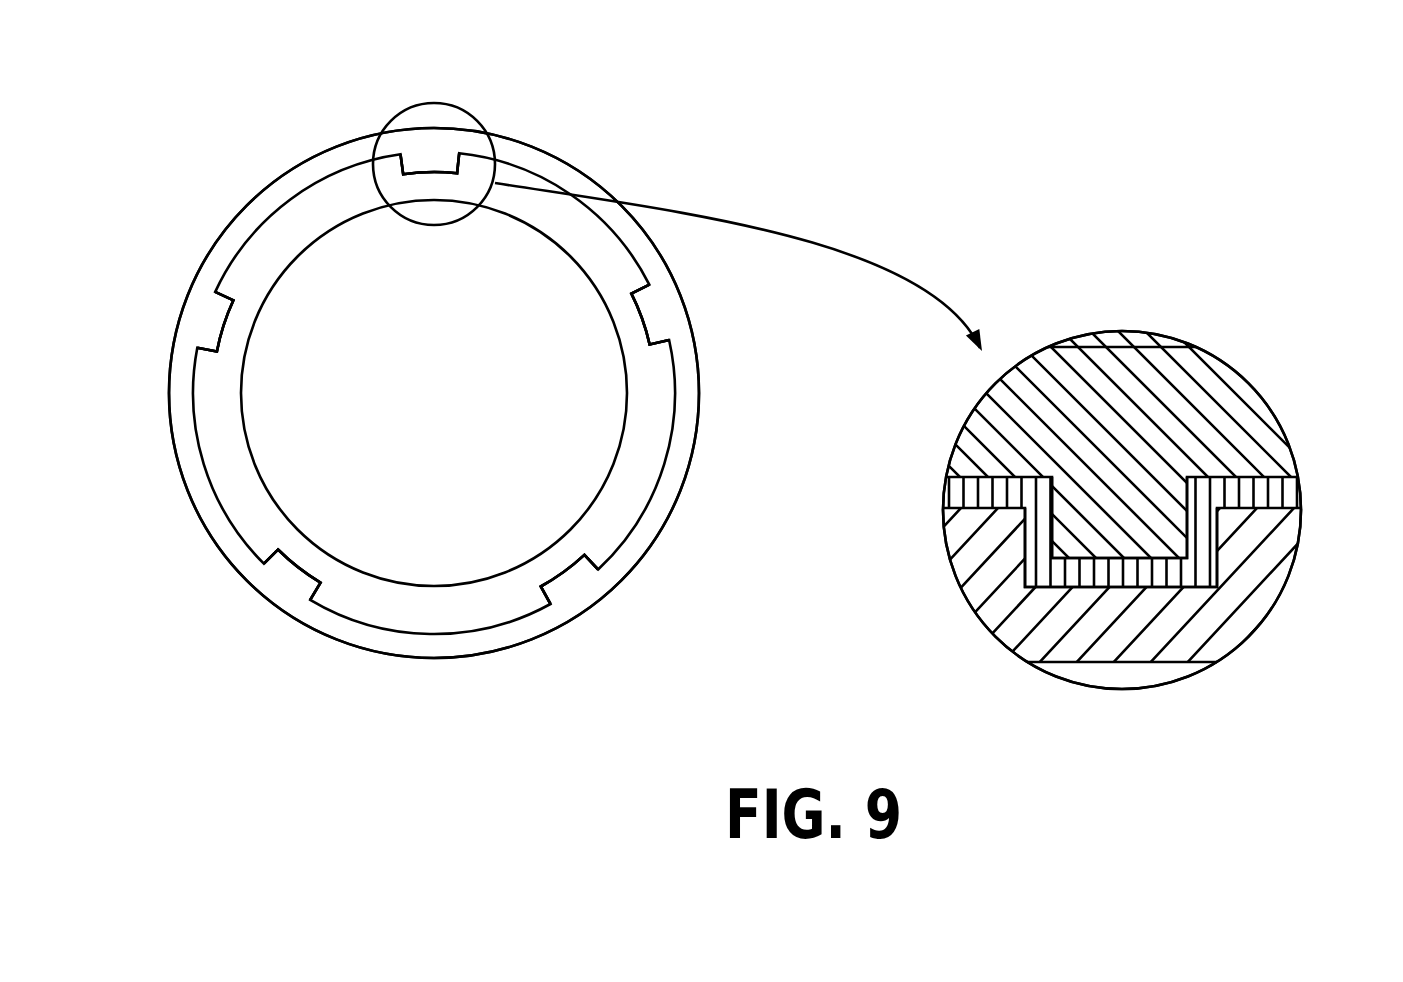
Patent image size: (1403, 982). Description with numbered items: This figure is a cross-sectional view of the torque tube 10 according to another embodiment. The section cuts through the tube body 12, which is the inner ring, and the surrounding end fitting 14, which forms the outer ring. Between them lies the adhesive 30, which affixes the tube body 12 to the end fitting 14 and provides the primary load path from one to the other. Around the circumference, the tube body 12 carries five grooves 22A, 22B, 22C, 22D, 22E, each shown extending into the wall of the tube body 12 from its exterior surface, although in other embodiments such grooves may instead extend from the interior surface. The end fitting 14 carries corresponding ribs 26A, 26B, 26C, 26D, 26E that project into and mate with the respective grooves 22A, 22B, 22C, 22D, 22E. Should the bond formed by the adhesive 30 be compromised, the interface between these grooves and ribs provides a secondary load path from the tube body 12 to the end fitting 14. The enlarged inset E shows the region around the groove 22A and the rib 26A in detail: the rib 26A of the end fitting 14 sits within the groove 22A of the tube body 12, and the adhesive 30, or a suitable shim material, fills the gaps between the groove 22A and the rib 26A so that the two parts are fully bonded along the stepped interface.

The torque tube 10 is at (662, 143).
The tube body 12 is at (537, 212).
The end fitting 14 is at (555, 152).
The groove 22A is at (467, 90).
The groove 22B is at (715, 300).
The groove 22C is at (616, 620).
The groove 22D is at (240, 634).
The groove 22E is at (168, 289).
The rib 26A is at (1121, 522).
The rib 26B is at (650, 315).
The rib 26C is at (569, 579).
The rib 26D is at (292, 575).
The rib 26E is at (215, 322).
The adhesive 30 is at (1280, 492).
The inset E is at (1266, 346).